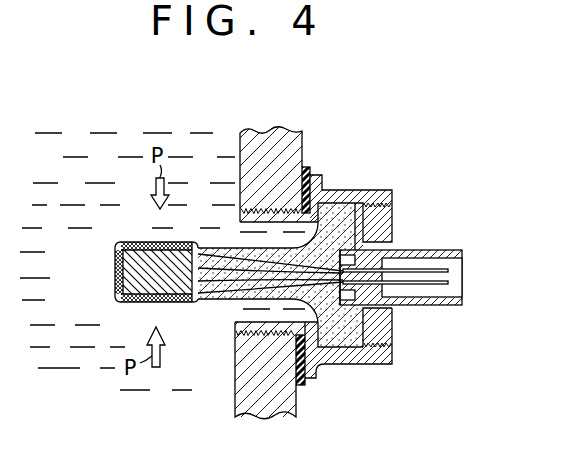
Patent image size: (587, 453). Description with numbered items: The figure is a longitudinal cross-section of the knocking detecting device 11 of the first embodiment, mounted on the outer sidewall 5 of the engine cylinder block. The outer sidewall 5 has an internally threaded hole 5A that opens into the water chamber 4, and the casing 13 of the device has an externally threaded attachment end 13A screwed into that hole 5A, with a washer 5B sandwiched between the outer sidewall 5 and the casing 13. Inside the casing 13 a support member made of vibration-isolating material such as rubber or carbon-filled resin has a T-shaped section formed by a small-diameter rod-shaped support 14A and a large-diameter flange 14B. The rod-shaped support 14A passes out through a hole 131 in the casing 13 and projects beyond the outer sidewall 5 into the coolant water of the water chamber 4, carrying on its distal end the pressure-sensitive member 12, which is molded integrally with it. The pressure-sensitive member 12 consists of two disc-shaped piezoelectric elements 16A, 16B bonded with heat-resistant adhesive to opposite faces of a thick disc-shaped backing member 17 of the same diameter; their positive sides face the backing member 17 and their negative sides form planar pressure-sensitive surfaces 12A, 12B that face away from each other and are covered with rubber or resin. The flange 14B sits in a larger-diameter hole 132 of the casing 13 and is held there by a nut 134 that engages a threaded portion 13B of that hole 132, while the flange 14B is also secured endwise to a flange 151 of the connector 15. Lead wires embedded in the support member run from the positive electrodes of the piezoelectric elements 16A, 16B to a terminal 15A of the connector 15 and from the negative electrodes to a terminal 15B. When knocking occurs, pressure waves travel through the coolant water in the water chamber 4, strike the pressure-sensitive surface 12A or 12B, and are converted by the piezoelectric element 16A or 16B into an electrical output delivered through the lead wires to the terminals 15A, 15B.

The water chamber 4 is at (135, 136).
The outer sidewall 5 is at (262, 249).
The internally threaded hole 5A is at (229, 230).
The washer 5B is at (306, 168).
The knocking detecting device 11 is at (395, 176).
The pressure-sensitive member 12 is at (124, 261).
The pressure-sensitive surface 12A is at (150, 242).
The pressure-sensitive surface 12B is at (157, 302).
The casing 13 is at (379, 276).
The externally threaded attachment end 13A is at (264, 196).
The threaded portion 13B is at (392, 354).
The hole 131 is at (248, 323).
The larger-diameter hole 132 is at (323, 367).
The nut 134 is at (392, 318).
The rod-shaped support 14A is at (212, 300).
The large-diameter flange 14B is at (280, 312).
The connector 15 is at (434, 252).
The terminal 15A is at (463, 266).
The terminal 15B is at (463, 286).
The flange 151 is at (393, 212).
The piezoelectric element 16A is at (120, 250).
The piezoelectric element 16B is at (120, 295).
The backing member 17 is at (125, 273).